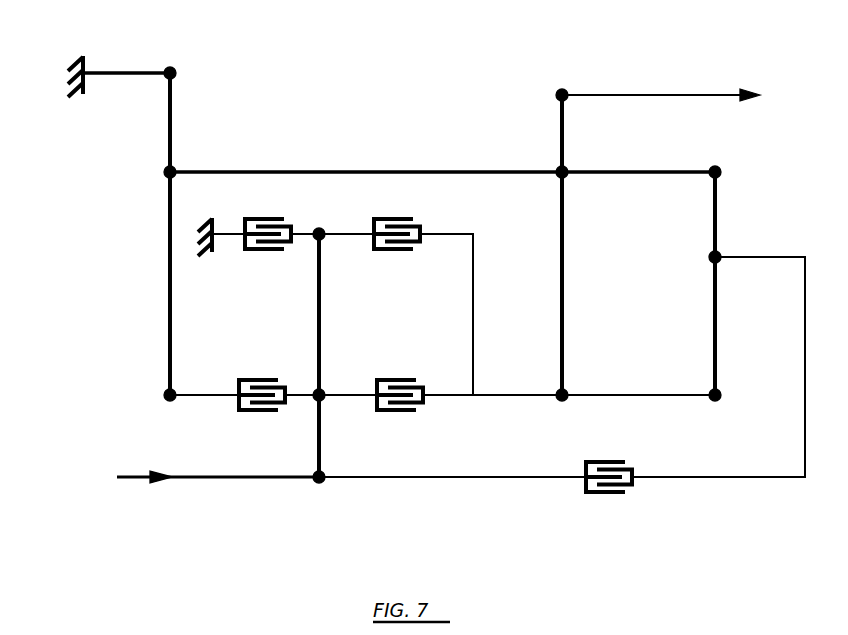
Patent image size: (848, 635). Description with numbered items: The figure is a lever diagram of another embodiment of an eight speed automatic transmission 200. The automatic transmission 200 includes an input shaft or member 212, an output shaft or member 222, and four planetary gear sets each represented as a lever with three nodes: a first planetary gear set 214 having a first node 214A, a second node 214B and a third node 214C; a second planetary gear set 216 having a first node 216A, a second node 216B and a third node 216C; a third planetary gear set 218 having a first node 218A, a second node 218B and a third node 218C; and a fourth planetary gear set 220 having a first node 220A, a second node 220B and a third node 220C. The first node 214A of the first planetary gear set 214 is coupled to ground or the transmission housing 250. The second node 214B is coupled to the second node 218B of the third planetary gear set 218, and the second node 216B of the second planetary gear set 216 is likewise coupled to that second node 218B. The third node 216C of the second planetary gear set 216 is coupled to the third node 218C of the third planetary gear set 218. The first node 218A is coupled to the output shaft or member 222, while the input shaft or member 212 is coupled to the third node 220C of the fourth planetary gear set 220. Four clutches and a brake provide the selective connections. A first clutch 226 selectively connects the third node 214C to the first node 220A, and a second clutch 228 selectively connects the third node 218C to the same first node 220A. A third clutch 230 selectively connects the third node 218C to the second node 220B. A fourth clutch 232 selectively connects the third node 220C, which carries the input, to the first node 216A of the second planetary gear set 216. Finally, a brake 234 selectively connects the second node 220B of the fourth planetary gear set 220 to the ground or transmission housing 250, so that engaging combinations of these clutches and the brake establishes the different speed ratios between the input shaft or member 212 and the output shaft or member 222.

The automatic transmission 200 is at (474, 35).
The input shaft or member 212 is at (143, 480).
The first planetary gear set 214 is at (139, 287).
The first node of the first planetary gear set 214A is at (176, 72).
The second node of the first planetary gear set 214B is at (164, 172).
The third node of the first planetary gear set 214C is at (174, 391).
The second planetary gear set 216 is at (749, 399).
The first node of the second planetary gear set 216A is at (719, 254).
The second node of the second planetary gear set 216B is at (719, 169).
The third node of the second planetary gear set 216C is at (719, 392).
The third planetary gear set 218 is at (529, 145).
The first node of the third planetary gear set 218A is at (566, 92).
The second node of the third planetary gear set 218B is at (566, 169).
The third node of the third planetary gear set 218C is at (566, 392).
The fourth planetary gear set 220 is at (306, 496).
The first node of the fourth planetary gear set 220A is at (322, 391).
The second node of the fourth planetary gear set 220B is at (350, 208).
The third node of the fourth planetary gear set 220C is at (324, 480).
The output shaft or member 222 is at (655, 97).
The first clutch 226 is at (262, 412).
The second clutch 228 is at (400, 412).
The third clutch 230 is at (397, 253).
The fourth clutch 232 is at (609, 495).
The brake 234 is at (268, 218).
The ground or transmission housing 250 is at (86, 88).